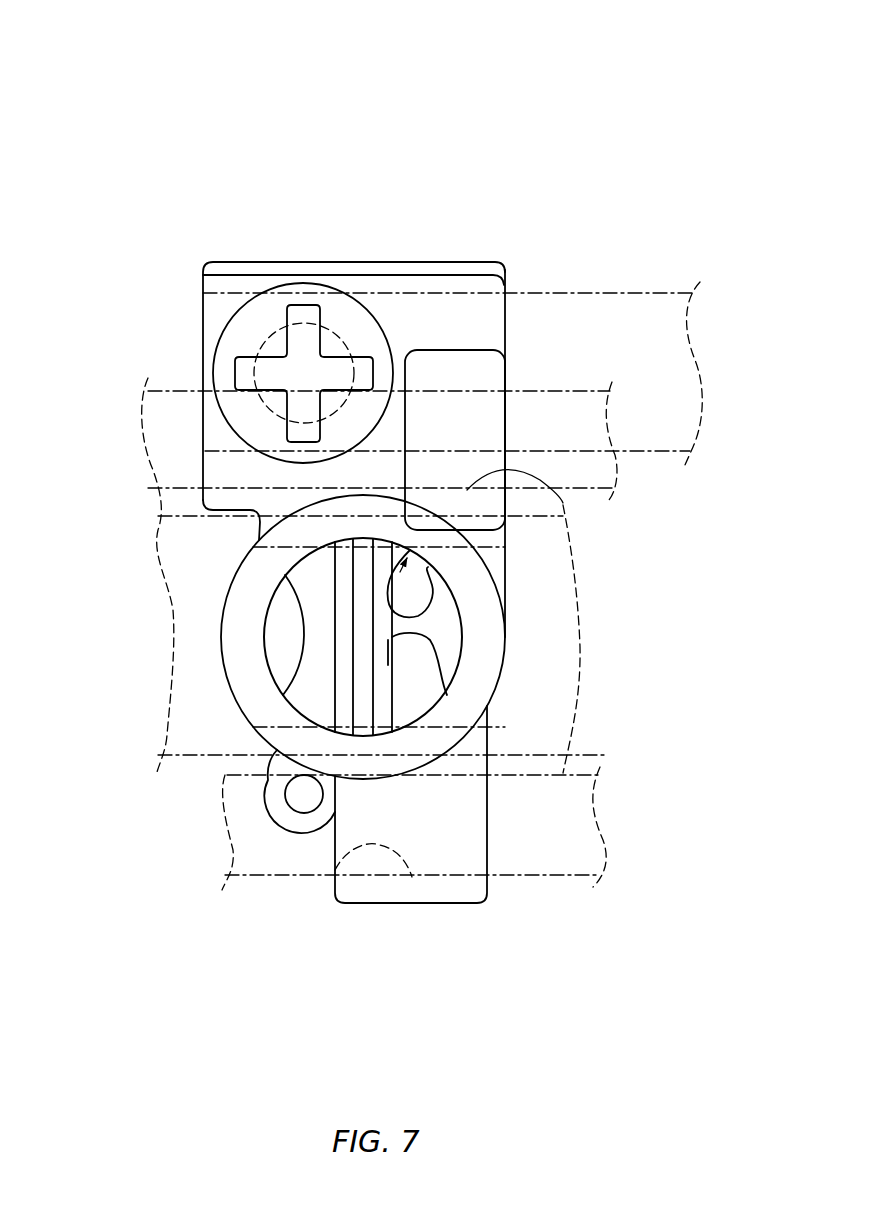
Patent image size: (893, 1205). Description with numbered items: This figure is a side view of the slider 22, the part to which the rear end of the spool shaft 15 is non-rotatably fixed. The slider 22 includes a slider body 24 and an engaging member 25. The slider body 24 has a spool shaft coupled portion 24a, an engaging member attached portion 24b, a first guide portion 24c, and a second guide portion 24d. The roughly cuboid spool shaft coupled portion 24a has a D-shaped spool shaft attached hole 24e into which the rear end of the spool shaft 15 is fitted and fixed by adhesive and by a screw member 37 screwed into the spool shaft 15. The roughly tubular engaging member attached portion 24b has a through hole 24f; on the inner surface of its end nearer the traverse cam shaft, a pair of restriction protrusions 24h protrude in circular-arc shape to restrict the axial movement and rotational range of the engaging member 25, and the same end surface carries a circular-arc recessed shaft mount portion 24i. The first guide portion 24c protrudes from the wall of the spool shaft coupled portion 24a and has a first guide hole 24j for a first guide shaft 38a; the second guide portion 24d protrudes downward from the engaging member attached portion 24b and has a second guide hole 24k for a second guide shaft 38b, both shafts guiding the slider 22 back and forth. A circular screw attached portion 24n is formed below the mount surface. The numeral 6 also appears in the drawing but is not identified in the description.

The fixing unit 6 is at (527, 170).
The spool shaft 15 is at (672, 293).
The slider 22 is at (271, 198).
The slider body 24 is at (364, 246).
The spool shaft coupled portion 24a is at (228, 253).
The engaging member attached portion 24b is at (217, 583).
The first guide portion 24c is at (466, 340).
The second guide portion 24d is at (393, 907).
The spool shaft attached hole 24e is at (490, 388).
The through hole 24f is at (430, 608).
The restriction protrusions 24h is at (307, 635).
The shaft mount portion 24i is at (248, 645).
The first guide hole 24j is at (563, 503).
The second guide hole 24k is at (335, 870).
The screw attached portion 24n is at (283, 827).
The engaging member 25 is at (310, 691).
The screw member 37 is at (240, 332).
The first guide shaft 38a is at (550, 390).
The second guide shaft 38b is at (553, 875).